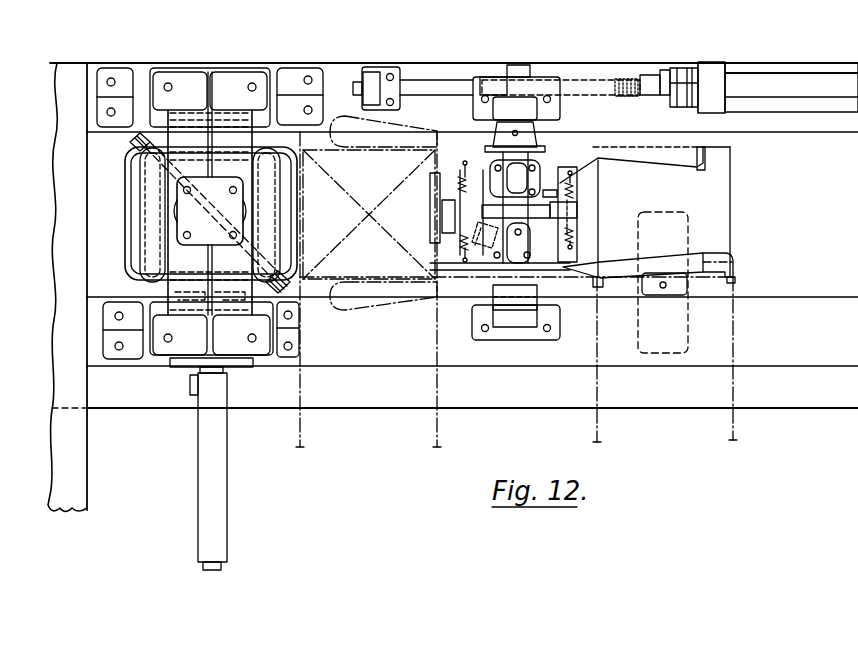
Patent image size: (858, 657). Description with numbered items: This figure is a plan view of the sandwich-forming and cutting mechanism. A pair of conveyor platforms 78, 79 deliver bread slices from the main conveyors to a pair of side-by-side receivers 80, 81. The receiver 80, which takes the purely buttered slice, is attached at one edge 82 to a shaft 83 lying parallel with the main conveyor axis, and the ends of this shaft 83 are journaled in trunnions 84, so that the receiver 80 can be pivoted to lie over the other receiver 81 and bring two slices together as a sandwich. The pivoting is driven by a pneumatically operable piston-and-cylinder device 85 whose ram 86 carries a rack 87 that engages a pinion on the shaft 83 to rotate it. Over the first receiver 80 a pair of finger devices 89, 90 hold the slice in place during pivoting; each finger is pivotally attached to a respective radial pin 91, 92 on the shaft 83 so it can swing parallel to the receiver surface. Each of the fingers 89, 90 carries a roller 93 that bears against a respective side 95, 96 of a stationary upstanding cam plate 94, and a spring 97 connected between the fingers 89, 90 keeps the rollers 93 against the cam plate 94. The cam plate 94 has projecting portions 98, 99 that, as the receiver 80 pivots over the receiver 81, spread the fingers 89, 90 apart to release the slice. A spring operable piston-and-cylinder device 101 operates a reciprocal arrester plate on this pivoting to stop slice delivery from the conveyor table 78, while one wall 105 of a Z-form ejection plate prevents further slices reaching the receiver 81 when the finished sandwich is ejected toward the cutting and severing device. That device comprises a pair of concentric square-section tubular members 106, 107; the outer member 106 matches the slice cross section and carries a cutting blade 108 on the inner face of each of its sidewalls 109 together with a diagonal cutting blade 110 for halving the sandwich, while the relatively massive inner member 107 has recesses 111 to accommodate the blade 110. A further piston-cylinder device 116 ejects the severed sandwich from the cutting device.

The conveyor platform 78 is at (713, 346).
The conveyor platform 79 is at (417, 360).
The receiver 80 is at (717, 220).
The receiver 81 is at (408, 158).
The edge 82 is at (547, 270).
The shaft 83 is at (517, 193).
The trunnions 84 is at (507, 307).
The pneumatically operable piston-and-cylinder device 85 is at (772, 87).
The ram 86 is at (667, 80).
The rack 87 is at (628, 83).
The finger device 89 is at (690, 283).
The finger device 90 is at (705, 162).
The radial pin 91 is at (493, 272).
The radial pin 92 is at (548, 165).
The roller 93 is at (568, 185).
The cam plate 94 is at (568, 210).
The side of cam plate 95 is at (563, 252).
The side of cam plate 96 is at (483, 213).
The spring 97 is at (568, 233).
The projecting portion 98 is at (462, 243).
The projecting portion 99 is at (503, 205).
The spring operable piston-and-cylinder device 101 is at (447, 253).
The wall 105 is at (449, 284).
The outer tubular member 106 is at (285, 214).
The inner tubular member 107 is at (258, 150).
The cutting blade 108 is at (211, 220).
The sidewalls 109 is at (135, 142).
The diagonal cutting blade 110 is at (153, 185).
The recesses 111 is at (138, 167).
The piston-cylinder device 116 is at (213, 442).